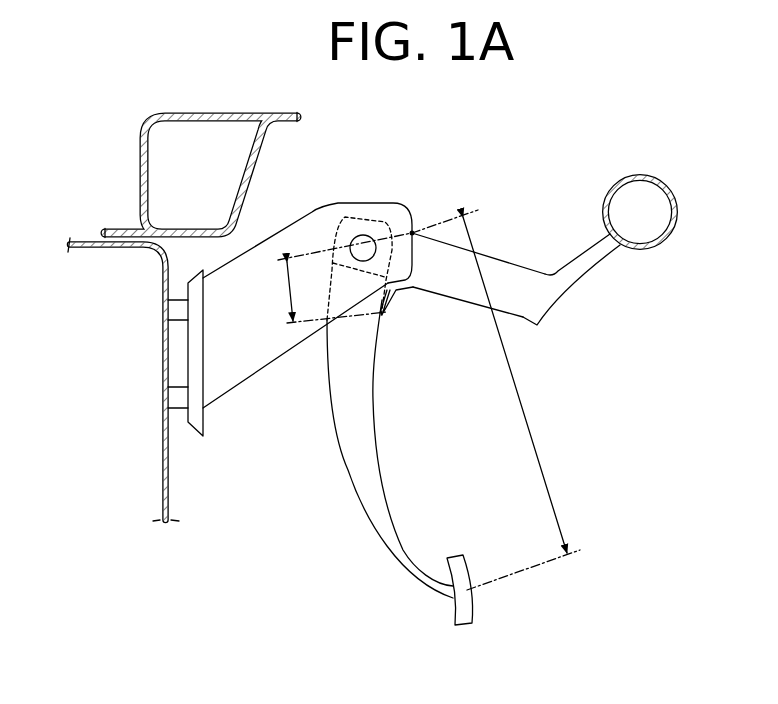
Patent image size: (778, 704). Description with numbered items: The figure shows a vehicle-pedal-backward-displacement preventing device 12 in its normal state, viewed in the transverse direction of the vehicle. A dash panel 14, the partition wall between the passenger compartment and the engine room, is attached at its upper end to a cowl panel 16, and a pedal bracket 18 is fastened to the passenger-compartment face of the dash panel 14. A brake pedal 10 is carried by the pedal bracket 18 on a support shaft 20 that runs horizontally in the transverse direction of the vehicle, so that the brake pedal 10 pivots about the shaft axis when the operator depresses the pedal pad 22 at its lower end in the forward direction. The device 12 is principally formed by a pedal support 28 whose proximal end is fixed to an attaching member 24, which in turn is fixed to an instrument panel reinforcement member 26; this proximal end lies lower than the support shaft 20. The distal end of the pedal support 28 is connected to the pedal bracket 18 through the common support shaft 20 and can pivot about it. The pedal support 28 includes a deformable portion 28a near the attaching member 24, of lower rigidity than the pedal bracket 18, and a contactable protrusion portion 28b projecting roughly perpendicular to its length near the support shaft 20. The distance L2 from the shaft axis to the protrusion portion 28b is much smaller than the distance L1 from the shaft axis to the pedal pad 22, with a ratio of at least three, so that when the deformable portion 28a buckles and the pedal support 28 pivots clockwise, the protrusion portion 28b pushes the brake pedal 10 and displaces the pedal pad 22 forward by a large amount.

The brake pedal 10 is at (343, 450).
The vehicle-pedal-backward-displacement preventing device 12 is at (379, 258).
The dash panel 14 is at (162, 457).
The cowl panel 16 is at (255, 158).
The pedal bracket 18 is at (240, 372).
The support shaft 20 is at (361, 240).
The pedal pad 22 is at (465, 607).
The attaching member 24 is at (587, 250).
The instrument panel reinforcement member 26 is at (657, 242).
The pedal support 28 is at (468, 307).
The deformable portion 28a is at (517, 270).
The contactable protrusion portion 28b is at (395, 298).
The distance between support shaft axis and pedal pad L1 is at (429, 400).
The distance between support shaft axis and contactable protrusion portion L2 is at (322, 292).